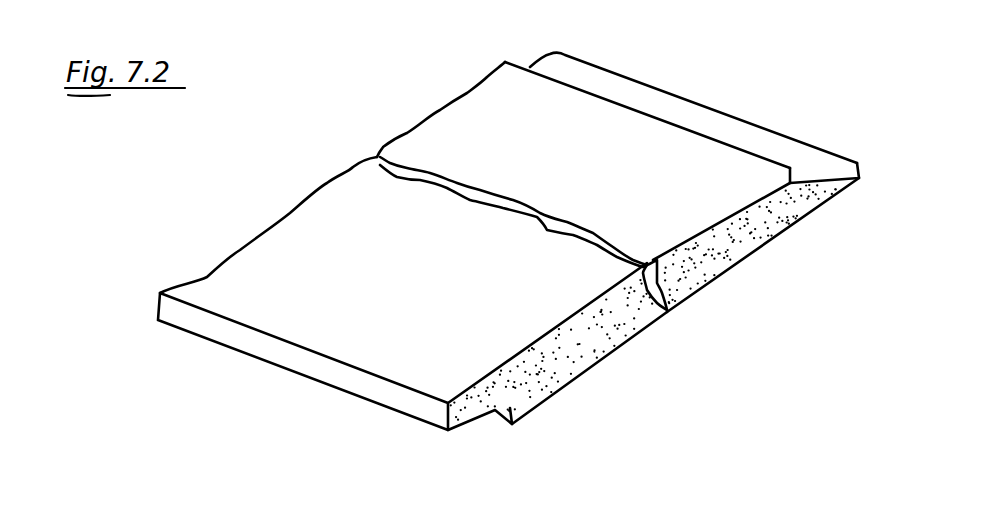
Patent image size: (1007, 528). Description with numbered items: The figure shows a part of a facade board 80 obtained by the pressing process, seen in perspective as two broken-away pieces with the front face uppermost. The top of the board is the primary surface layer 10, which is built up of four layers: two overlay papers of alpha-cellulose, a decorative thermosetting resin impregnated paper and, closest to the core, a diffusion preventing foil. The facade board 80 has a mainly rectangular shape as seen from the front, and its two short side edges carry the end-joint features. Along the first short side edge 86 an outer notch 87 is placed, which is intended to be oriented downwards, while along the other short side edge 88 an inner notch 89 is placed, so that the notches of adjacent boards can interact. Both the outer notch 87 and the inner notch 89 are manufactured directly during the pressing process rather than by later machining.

The primary surface layer 10 is at (509, 97).
The facade board 80 is at (340, 78).
The first short side edge 86 is at (247, 342).
The outer notch 87 is at (473, 429).
The other short side edge 88 is at (717, 106).
The inner notch 89 is at (632, 84).